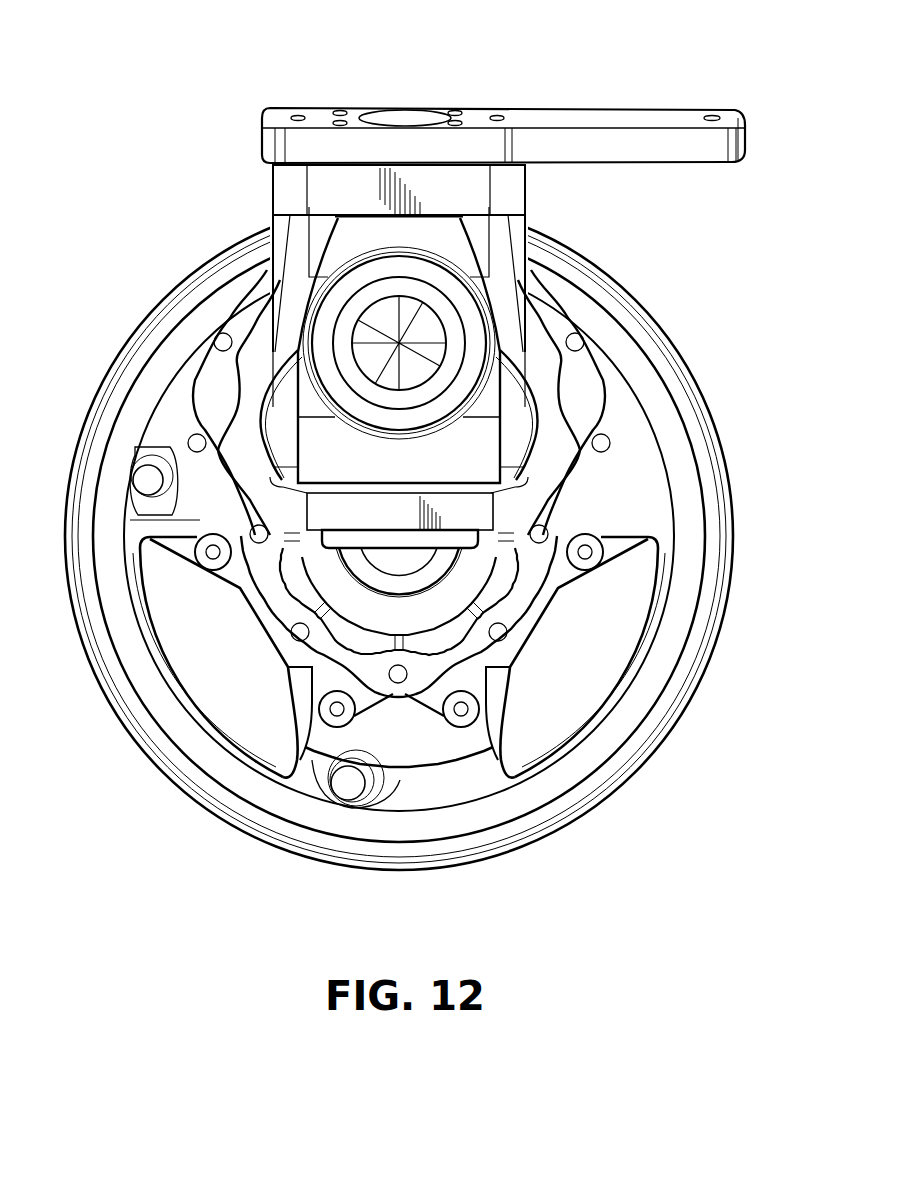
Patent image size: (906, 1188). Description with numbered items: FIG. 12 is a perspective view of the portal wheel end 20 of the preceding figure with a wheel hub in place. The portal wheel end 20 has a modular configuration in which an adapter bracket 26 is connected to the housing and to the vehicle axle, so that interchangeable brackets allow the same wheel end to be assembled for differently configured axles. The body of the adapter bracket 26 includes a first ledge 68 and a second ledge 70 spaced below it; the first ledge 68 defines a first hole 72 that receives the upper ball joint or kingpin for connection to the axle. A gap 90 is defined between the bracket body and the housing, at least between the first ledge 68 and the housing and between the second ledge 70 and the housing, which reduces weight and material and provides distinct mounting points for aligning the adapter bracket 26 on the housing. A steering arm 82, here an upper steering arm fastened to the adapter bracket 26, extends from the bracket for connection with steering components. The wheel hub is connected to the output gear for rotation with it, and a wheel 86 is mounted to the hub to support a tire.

The portal wheel end 20 is at (134, 806).
The adapter bracket 26 is at (292, 193).
The first ledge 68 is at (606, 136).
The second ledge 70 is at (326, 512).
The first hole 72 is at (403, 116).
The steering arm 82 is at (748, 142).
The wheel 86 is at (692, 662).
The gap 90 is at (283, 418).